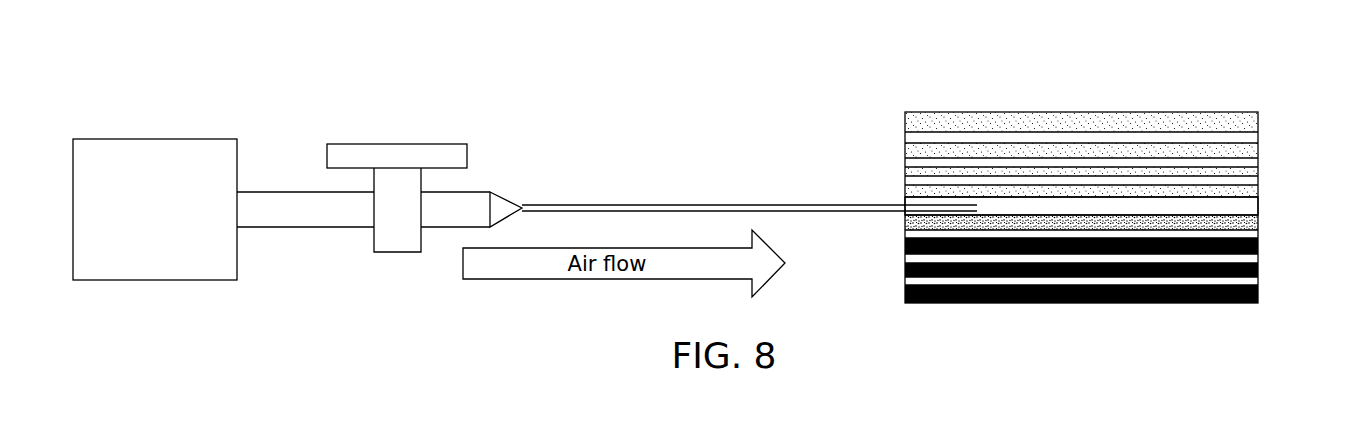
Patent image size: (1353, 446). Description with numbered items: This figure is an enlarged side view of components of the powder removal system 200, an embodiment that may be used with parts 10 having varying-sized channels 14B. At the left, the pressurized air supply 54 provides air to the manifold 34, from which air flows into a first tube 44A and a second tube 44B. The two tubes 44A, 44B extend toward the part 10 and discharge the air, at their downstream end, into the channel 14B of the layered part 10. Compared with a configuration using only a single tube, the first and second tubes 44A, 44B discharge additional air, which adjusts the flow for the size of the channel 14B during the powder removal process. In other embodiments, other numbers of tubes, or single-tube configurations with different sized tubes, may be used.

The pressurized air supply 54 is at (155, 137).
The powder removal system 200 is at (452, 108).
The manifold 34 is at (393, 183).
The first tube 44A is at (716, 202).
The second tube 44B is at (803, 203).
The part 10 is at (1115, 167).
The channel 14B is at (1245, 207).